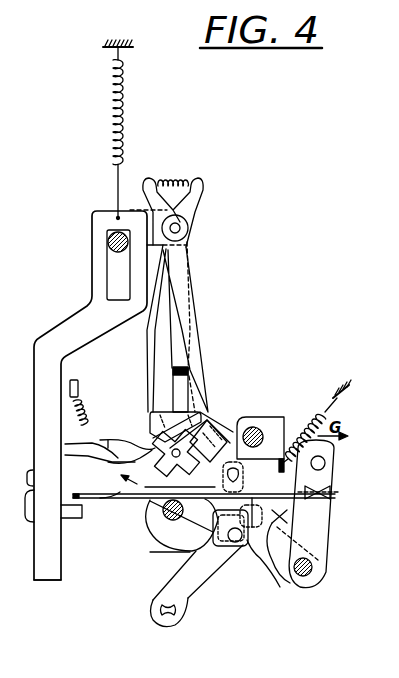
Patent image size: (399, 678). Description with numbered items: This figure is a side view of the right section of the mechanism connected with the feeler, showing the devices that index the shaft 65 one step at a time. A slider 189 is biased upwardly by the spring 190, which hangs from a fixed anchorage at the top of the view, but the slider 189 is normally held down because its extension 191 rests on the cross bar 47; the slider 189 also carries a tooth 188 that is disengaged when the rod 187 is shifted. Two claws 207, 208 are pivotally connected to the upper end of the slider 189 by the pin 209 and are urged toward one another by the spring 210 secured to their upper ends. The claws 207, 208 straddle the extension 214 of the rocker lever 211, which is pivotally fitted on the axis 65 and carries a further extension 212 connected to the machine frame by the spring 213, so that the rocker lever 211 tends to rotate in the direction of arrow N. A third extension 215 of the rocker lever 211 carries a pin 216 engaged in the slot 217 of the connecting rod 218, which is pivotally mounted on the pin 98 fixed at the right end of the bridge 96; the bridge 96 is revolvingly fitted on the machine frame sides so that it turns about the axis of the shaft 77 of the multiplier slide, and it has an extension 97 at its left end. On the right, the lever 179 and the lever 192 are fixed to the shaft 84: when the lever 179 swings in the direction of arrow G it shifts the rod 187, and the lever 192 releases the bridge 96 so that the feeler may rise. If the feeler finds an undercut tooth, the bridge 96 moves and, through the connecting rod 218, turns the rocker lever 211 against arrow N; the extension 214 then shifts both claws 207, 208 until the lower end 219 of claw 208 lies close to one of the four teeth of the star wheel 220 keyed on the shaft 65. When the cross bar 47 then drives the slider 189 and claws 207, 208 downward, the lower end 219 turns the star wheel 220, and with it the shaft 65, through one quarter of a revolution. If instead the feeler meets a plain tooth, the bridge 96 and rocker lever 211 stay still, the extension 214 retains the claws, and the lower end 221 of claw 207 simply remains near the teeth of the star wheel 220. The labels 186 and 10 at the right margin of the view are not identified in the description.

The spring 190 is at (122, 106).
The spring 210 is at (171, 181).
The pin 209 is at (181, 228).
The slider 189 is at (97, 292).
The claw 208 is at (200, 313).
The claw 207 is at (156, 328).
The extension 214 is at (190, 368).
The star wheel 220 is at (207, 413).
The lower end 219 is at (228, 460).
The slot 217 is at (246, 417).
The spring 213 is at (80, 400).
The shaft 65 is at (153, 438).
The rocker lever 211 is at (120, 452).
The extension 212 is at (95, 447).
The cross bar 47 is at (32, 480).
The lower end 221 is at (121, 488).
The rod 187 is at (104, 499).
The extension 191 is at (58, 526).
The tooth 188 is at (75, 564).
The shaft 77 is at (163, 516).
The bridge 96 is at (193, 552).
The extension 215 is at (150, 552).
The pin 98 is at (237, 545).
The extension 97 is at (150, 624).
The pin 216 is at (243, 490).
The lever 192 is at (283, 520).
The lever 179 is at (322, 527).
The shaft 84 is at (310, 568).
The connecting rod 218 is at (280, 587).
The frame 186 is at (384, 271).
The machine 10 is at (391, 301).